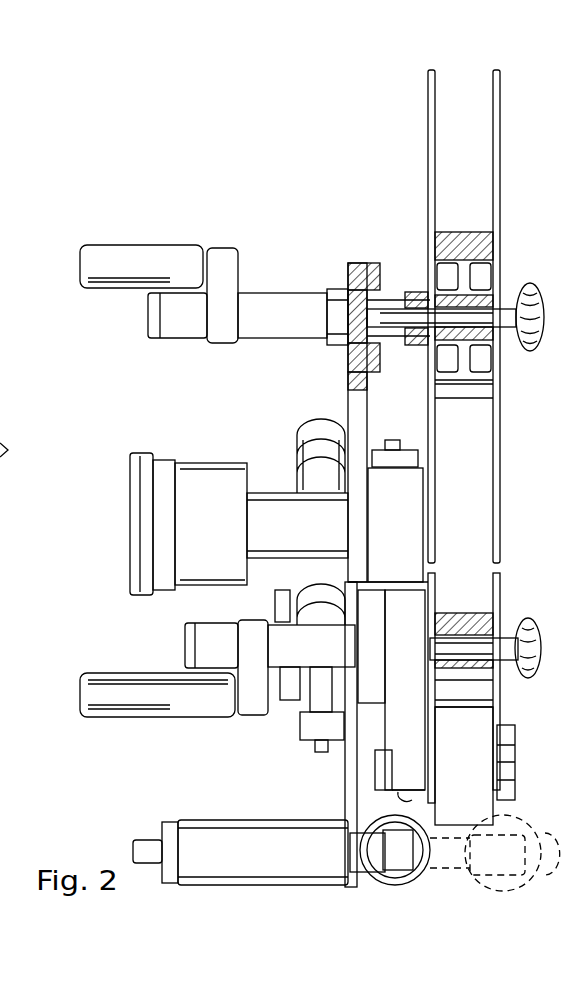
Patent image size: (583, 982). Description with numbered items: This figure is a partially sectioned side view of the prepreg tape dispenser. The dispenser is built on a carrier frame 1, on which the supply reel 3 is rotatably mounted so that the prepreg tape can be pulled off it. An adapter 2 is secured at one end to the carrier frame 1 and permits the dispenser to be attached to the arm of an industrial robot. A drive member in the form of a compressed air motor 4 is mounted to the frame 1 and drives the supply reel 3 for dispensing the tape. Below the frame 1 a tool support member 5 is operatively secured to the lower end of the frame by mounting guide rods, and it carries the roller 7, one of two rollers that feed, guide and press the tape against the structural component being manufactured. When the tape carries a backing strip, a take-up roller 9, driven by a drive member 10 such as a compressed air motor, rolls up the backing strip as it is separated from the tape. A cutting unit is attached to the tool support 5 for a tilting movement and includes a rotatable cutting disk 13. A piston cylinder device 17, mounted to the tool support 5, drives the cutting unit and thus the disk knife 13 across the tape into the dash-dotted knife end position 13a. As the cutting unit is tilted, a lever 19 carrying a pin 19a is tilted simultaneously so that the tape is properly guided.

The carrier frame 1 is at (348, 400).
The adapter 2 is at (129, 497).
The supply reel 3 is at (500, 179).
The compressed air motor 4 is at (127, 256).
The tool support member 5 is at (416, 665).
The roller 7 is at (472, 755).
The take-up roller 9 is at (500, 600).
The drive member 10 is at (118, 685).
The cutting disk 13 is at (414, 878).
The knife end position 13a is at (504, 868).
The piston cylinder device 17 is at (298, 478).
The lever 19 is at (515, 797).
The pin 19a is at (402, 797).